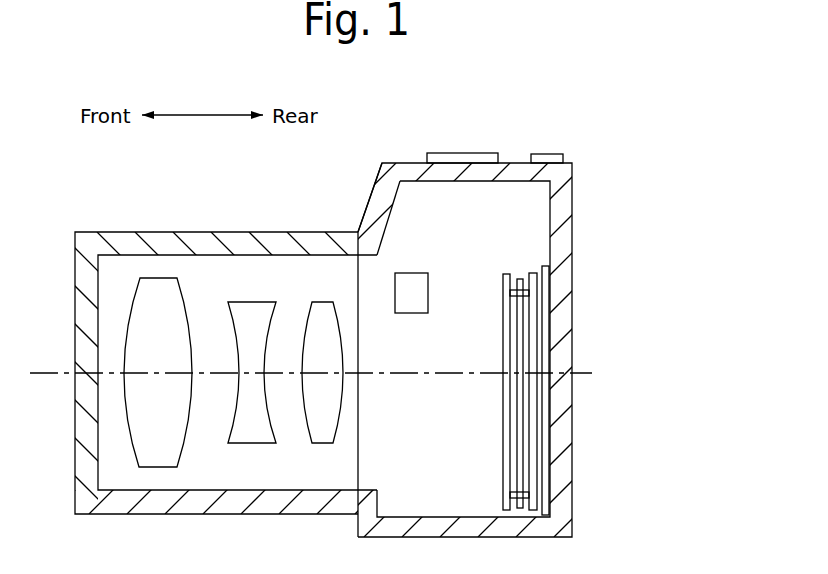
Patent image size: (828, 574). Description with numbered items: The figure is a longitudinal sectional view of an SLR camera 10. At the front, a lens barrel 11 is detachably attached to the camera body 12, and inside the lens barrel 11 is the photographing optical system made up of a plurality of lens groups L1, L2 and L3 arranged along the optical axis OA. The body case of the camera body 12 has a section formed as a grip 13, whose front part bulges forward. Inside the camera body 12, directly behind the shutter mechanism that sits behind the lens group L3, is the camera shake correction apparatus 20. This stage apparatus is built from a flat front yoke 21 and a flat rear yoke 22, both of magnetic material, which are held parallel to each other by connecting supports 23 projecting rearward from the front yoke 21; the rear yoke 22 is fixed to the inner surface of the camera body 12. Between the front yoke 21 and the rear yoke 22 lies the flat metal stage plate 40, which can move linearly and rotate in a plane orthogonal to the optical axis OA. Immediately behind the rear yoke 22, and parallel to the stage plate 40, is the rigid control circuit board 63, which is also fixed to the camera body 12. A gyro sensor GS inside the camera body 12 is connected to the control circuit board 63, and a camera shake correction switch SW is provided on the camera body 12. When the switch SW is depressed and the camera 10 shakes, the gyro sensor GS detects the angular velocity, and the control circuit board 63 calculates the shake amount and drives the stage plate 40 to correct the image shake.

The camera 10 is at (606, 152).
The lens barrel 11 is at (122, 247).
The camera body 12 is at (377, 232).
The grip 13 is at (395, 192).
The camera shake correction apparatus 20 is at (531, 315).
The front yoke 21 is at (505, 436).
The rear yoke 22 is at (533, 401).
The connecting supports 23 is at (512, 293).
The stage plate 40 is at (520, 343).
The control circuit board 63 is at (549, 339).
The lens group L1 is at (160, 313).
The lens group L2 is at (248, 310).
The lens group L3 is at (327, 322).
The gyro sensor GS is at (410, 273).
The camera shake correction switch SW is at (550, 153).
The optical axis OA is at (590, 378).